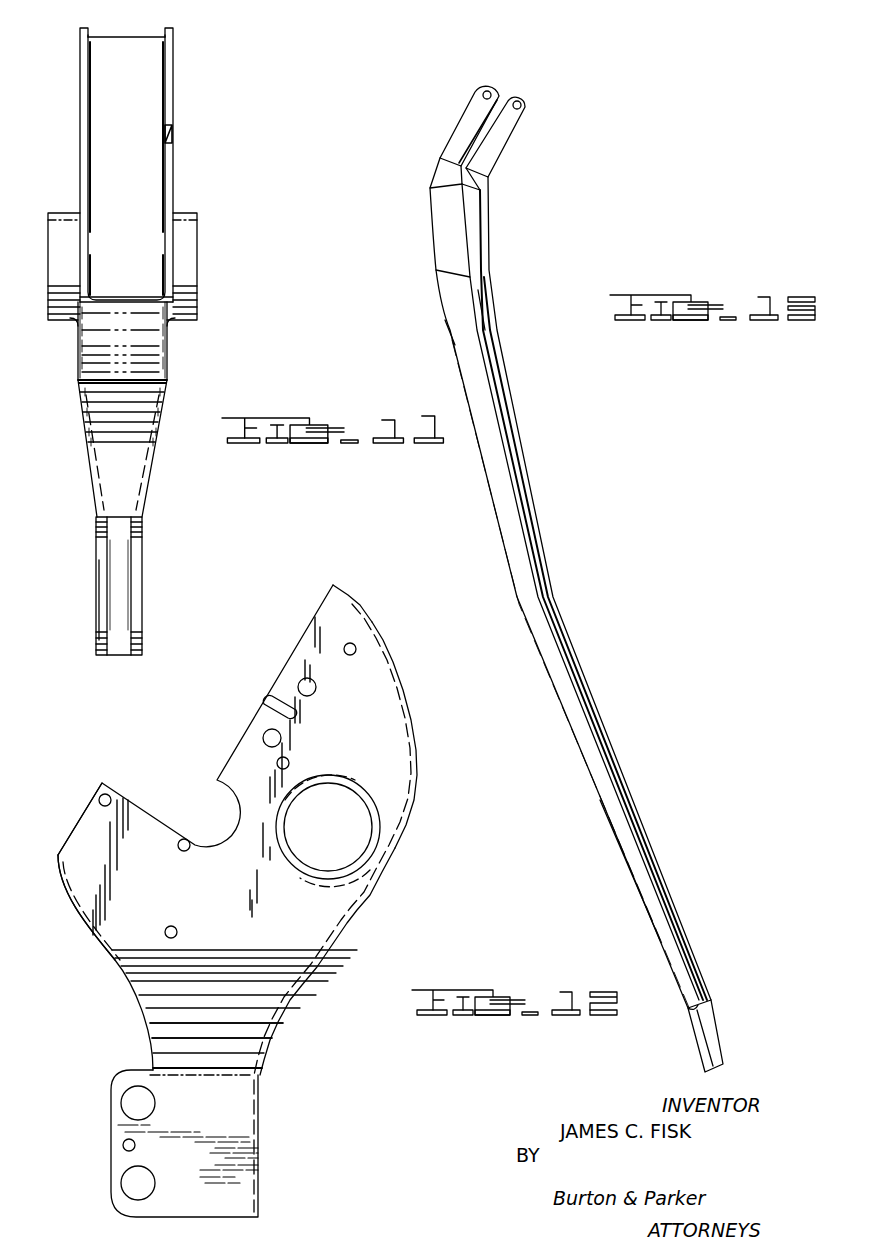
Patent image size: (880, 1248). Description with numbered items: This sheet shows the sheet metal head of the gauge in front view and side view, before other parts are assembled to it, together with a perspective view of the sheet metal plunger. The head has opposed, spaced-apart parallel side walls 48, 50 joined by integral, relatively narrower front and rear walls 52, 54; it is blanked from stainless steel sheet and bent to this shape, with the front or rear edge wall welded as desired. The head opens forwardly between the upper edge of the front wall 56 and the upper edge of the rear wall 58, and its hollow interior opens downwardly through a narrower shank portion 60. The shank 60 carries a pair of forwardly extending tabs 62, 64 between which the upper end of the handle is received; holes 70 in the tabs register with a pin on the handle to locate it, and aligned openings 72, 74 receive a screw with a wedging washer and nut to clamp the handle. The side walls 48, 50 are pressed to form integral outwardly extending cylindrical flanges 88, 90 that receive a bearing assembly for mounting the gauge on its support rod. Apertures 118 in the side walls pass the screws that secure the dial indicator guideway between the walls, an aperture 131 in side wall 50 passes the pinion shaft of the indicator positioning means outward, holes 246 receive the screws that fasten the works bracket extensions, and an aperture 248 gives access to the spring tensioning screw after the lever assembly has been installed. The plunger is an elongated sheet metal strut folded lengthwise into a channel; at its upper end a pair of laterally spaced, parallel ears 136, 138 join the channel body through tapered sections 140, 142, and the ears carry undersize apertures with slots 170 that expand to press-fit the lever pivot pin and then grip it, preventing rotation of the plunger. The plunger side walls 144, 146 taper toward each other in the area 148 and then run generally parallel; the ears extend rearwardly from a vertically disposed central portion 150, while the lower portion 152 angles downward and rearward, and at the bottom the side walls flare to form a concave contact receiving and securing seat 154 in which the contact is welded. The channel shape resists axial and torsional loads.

In FIG. 11, the side wall 48 is at (80, 103).
In FIG. 11, the side wall 50 is at (172, 102).
In FIG. 12, the side wall 50 is at (364, 729).
In FIG. 11, the front wall 52 is at (158, 358).
In FIG. 12, the front wall 52 is at (67, 905).
In FIG. 11, the rear wall 54 is at (130, 116).
In FIG. 12, the rear wall 54 is at (416, 750).
In FIG. 12, the upper edge of the front wall 56 is at (58, 856).
In FIG. 12, the upper edge of the rear wall 58 is at (360, 602).
In FIG. 11, the shank portion 60 is at (142, 538).
In FIG. 12, the shank portion 60 is at (230, 1078).
In FIG. 11, the tab 62 is at (134, 604).
In FIG. 12, the tab 62 is at (114, 1158).
In FIG. 11, the tab 64 is at (99, 582).
In FIG. 12, the holes 70 is at (135, 1146).
In FIG. 12, the opening 72 is at (126, 1100).
In FIG. 12, the opening 74 is at (124, 1184).
In FIG. 11, the cylindrical flange 88 is at (190, 213).
In FIG. 12, the cylindrical flange 88 is at (380, 832).
In FIG. 11, the cylindrical flange 90 is at (60, 213).
In FIG. 12, the apertures 118 is at (355, 649).
In FIG. 11, the aperture 131 is at (172, 140).
In FIG. 12, the aperture 131 is at (268, 700).
In FIG. 13, the ear 136 is at (516, 140).
In FIG. 13, the ear 138 is at (465, 126).
In FIG. 13, the tapered section 140 is at (484, 183).
In FIG. 13, the tapered section 142 is at (432, 182).
In FIG. 13, the plunger side wall 144 is at (487, 310).
In FIG. 13, the plunger side wall 146 is at (457, 327).
In FIG. 13, the tapered area 148 is at (440, 230).
In FIG. 13, the central portion 150 is at (549, 497).
In FIG. 13, the lower portion 152 is at (654, 825).
In FIG. 13, the contact receiving and securing seat 154 is at (706, 1042).
In FIG. 13, the apertures and slots 170 is at (487, 90).
In FIG. 12, the holes 246 is at (182, 840).
In FIG. 12, the aperture 248 is at (177, 932).